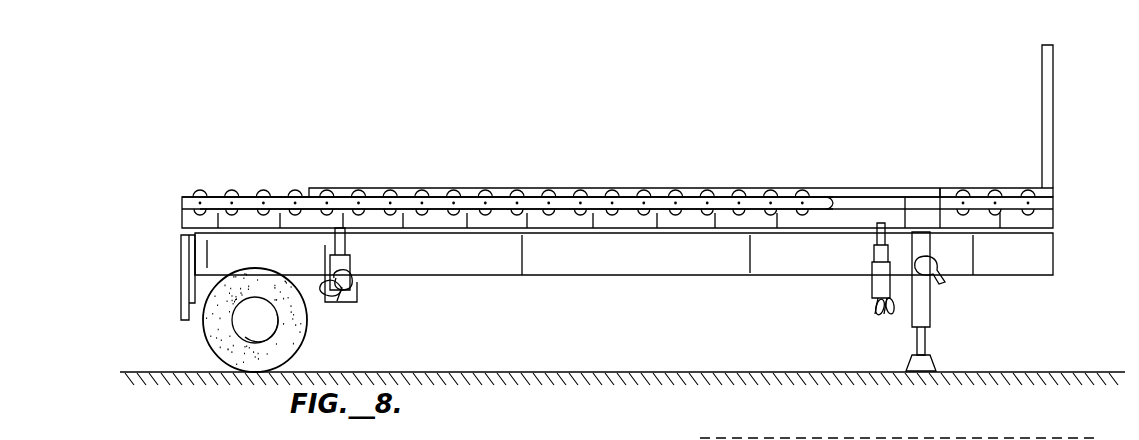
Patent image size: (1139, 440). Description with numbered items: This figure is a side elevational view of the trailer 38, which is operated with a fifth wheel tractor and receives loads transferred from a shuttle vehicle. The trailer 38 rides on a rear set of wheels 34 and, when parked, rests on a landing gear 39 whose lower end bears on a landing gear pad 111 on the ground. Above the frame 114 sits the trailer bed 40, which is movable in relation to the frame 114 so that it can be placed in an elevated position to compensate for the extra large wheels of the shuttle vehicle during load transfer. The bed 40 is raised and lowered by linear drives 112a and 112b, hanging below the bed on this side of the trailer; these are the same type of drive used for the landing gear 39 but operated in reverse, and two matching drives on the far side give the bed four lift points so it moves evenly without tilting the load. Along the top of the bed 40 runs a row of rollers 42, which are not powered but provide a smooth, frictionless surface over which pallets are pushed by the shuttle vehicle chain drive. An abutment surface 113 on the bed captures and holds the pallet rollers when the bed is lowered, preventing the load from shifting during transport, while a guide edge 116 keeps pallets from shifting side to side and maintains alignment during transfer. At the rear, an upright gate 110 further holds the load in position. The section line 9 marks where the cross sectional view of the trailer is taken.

The line 9— 9 is at (311, 175).
The rear set of wheels 34 is at (207, 347).
The trailer 38 is at (778, 175).
The landing gear 39 is at (931, 312).
The trailer bed 40 is at (565, 200).
The rollers 42 is at (228, 195).
The gate 110 is at (1047, 100).
The landing gear pad 111 is at (934, 366).
The linear drive 112a is at (358, 283).
The linear drive 112b is at (872, 287).
The abutment surface 113 is at (590, 198).
The frame 114 is at (195, 256).
The guide edge 116 is at (333, 193).